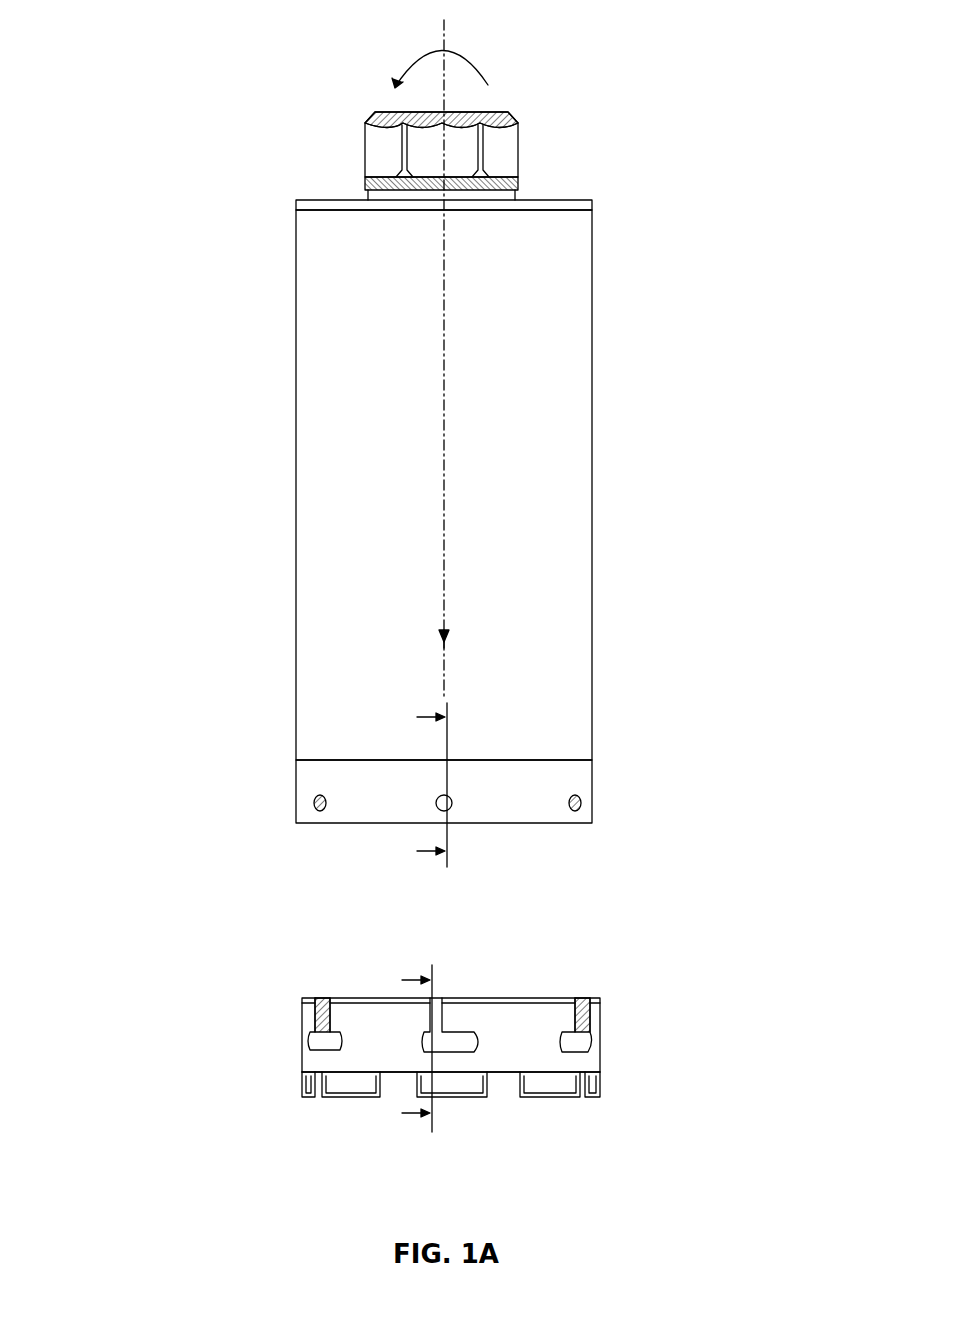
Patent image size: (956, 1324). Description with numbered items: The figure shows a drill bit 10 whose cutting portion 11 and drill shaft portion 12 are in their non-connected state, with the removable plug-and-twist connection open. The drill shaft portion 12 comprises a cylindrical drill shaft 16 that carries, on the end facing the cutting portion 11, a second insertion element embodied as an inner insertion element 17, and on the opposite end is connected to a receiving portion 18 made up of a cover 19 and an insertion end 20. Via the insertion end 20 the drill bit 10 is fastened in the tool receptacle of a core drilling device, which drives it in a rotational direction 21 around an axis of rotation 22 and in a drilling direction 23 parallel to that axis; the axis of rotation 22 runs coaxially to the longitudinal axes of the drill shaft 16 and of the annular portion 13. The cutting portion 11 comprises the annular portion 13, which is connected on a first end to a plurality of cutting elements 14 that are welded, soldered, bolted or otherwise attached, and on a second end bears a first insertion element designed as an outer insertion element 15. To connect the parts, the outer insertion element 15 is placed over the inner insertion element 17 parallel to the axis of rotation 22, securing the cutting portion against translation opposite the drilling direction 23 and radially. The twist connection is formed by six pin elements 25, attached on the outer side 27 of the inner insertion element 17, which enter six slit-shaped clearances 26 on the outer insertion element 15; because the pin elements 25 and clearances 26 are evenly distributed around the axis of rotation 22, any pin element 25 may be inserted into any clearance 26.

The drill bit 10 is at (235, 122).
The cutting portion 11 is at (178, 1010).
The drill shaft portion 12 is at (175, 408).
The annular portion 13 is at (595, 1066).
The cutting elements 14 is at (310, 1100).
The outer insertion element 15 is at (590, 1012).
The cylindrical drill shaft 16 is at (582, 457).
The inner insertion element 17 is at (585, 776).
The receiving portion 18 is at (706, 144).
The cover 19 is at (318, 200).
The insertion end 20 is at (508, 150).
The rotational direction 21 is at (440, 72).
The axis of rotation 22 is at (444, 320).
The drilling direction 23 is at (444, 597).
The pin elements 25 is at (320, 812).
The slit-shaped clearances 26 is at (322, 1000).
The outer side 27 is at (300, 795).